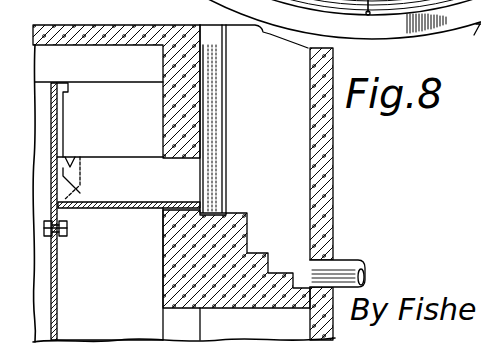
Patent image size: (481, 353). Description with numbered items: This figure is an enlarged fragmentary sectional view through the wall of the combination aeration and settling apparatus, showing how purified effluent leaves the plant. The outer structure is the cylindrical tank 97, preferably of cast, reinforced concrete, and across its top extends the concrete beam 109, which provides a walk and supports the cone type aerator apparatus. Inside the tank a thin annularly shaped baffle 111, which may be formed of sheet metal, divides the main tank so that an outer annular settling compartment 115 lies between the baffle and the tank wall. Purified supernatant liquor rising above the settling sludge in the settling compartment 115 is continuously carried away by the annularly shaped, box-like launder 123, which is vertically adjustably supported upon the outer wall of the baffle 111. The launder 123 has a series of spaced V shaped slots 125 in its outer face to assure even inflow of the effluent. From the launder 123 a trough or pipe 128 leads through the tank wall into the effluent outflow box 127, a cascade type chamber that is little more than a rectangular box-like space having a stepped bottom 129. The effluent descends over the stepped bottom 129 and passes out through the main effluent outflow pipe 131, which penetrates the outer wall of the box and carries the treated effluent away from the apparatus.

The cylindrical tank 97 is at (164, 113).
The concrete beam 109 is at (113, 25).
The annularly shaped baffle 111 is at (57, 278).
The outer annular settling compartment 115 is at (118, 321).
The launder 123 is at (65, 155).
The V shaped slots 125 is at (71, 155).
The effluent outflow box 127 is at (285, 134).
The trough or pipe 128 is at (107, 199).
The stepped bottom 129 is at (250, 252).
The main effluent outflow pipe 131 is at (350, 259).